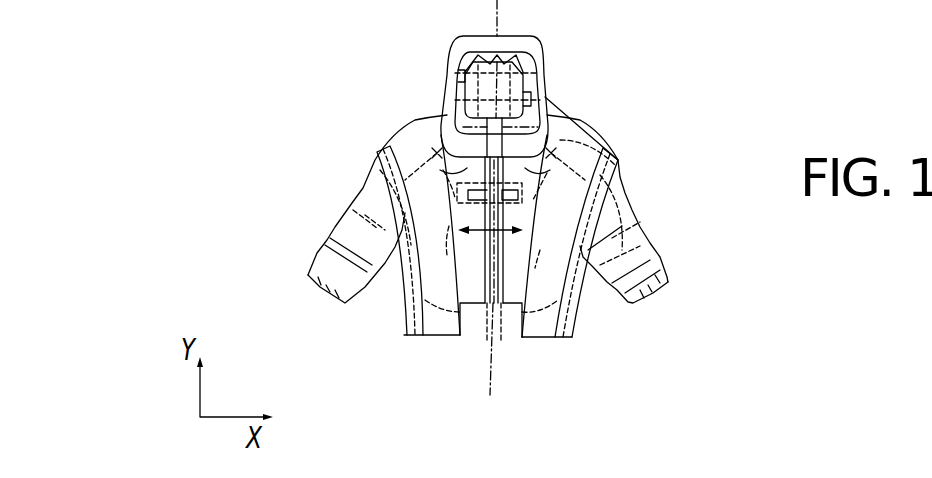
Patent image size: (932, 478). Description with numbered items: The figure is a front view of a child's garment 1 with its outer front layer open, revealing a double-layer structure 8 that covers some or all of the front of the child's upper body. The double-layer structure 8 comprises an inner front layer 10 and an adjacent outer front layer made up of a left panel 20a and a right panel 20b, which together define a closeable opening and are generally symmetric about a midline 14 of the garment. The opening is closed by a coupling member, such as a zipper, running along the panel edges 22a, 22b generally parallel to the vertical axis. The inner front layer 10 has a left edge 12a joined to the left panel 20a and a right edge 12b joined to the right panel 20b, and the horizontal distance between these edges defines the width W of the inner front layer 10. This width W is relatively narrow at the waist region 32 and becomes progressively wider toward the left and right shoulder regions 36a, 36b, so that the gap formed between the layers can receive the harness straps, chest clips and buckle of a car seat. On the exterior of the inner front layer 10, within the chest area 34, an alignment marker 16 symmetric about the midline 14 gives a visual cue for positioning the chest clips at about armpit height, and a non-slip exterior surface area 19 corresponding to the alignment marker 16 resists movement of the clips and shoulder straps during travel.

The garment 1 is at (254, 131).
The double-layer structure 8 is at (545, 358).
The inner front layer 10 is at (433, 152).
The left edge 12a is at (548, 236).
The right edge 12b is at (463, 213).
The midline 14 is at (488, 340).
The alignment marker 16 is at (553, 150).
The non-slip exterior surface area 19 is at (613, 168).
The left panel 20a is at (585, 250).
The right panel 20b is at (425, 275).
The right placket 22a is at (575, 302).
The left placket 22b is at (405, 340).
The waist region 32 is at (509, 305).
The chest area 34 is at (457, 195).
The left shoulder region 36a is at (553, 150).
The right shoulder region 36b is at (436, 150).
The width W is at (527, 232).